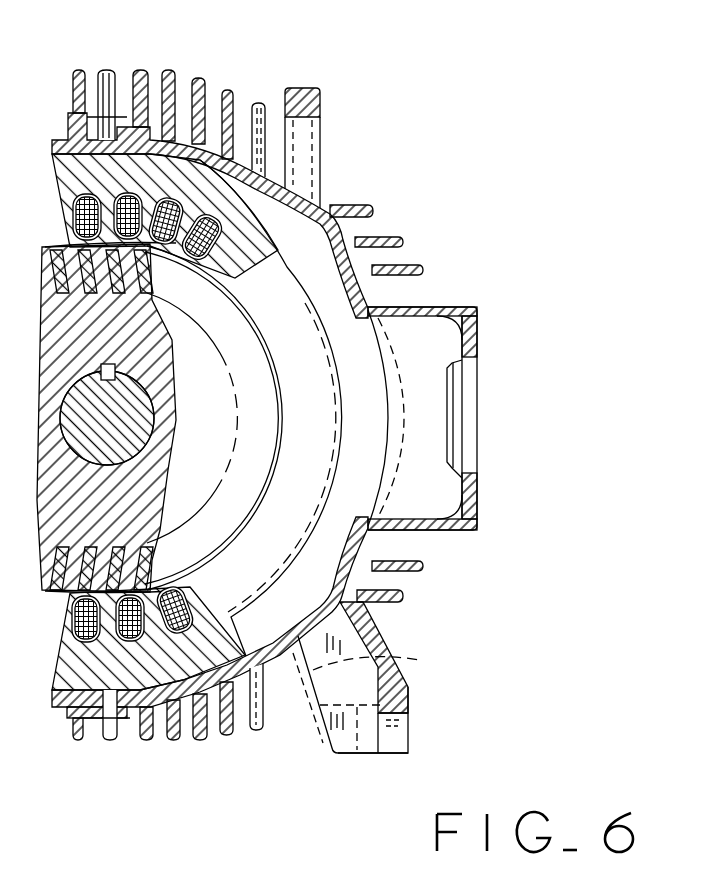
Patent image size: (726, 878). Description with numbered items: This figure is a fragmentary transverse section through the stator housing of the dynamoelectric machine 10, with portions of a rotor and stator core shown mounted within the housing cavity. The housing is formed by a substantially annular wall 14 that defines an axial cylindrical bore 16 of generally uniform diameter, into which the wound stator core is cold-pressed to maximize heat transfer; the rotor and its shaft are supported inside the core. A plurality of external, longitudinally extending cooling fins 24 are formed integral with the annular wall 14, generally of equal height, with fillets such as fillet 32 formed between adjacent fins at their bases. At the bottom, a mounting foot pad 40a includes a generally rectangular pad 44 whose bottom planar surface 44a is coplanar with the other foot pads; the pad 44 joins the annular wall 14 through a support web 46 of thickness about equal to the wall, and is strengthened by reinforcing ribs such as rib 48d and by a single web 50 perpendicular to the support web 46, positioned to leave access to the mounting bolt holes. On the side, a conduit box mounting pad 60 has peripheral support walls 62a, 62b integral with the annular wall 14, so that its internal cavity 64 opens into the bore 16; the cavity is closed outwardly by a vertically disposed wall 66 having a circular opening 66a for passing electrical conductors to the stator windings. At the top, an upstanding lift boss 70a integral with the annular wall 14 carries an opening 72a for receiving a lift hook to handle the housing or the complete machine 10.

The dynamoelectric machine 10 is at (470, 115).
The annular wall 14 is at (217, 160).
The axial cylindrical bore 16 is at (298, 228).
The cooling fins 24 is at (108, 72).
The fillet 32 is at (242, 150).
The mounting foot pad 40a is at (427, 752).
The rectangular pad 44 is at (410, 722).
The bottom planar surface 44a is at (335, 754).
The support web 46 is at (420, 660).
The reinforcing rib 48d is at (302, 697).
The web 50 is at (343, 647).
The conduit box mounting pad 60 is at (519, 320).
The peripheral support wall 62a is at (430, 307).
The peripheral support wall 62b is at (440, 530).
The internal cavity 64 is at (418, 345).
The vertically disposed wall 66 is at (474, 507).
The circular opening 66a is at (467, 473).
The lift boss 70a is at (299, 112).
The opening 72a is at (320, 127).